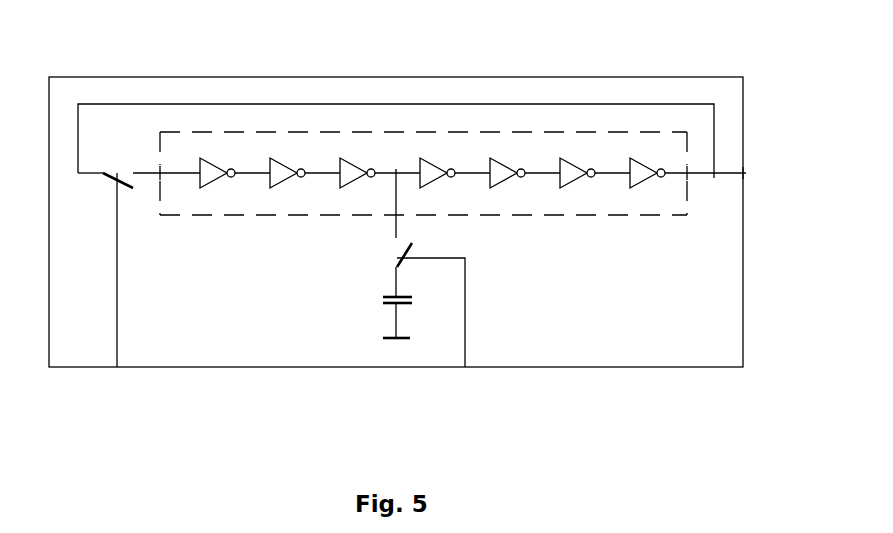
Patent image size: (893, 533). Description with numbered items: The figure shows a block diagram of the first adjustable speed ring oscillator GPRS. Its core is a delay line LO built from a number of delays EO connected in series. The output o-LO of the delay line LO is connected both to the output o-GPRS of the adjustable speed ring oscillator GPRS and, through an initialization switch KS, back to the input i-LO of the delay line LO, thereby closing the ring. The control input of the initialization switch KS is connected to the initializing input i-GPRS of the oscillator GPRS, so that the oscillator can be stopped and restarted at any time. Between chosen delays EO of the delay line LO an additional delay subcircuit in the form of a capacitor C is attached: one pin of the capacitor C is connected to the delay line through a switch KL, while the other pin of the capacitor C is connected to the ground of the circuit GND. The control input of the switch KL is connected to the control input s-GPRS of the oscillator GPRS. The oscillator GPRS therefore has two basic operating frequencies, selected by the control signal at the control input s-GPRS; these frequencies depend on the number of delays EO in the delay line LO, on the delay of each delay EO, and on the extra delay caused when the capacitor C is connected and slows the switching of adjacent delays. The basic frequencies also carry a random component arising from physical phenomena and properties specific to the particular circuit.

The initialization switch KS is at (151, 95).
The input of delay line i-LO is at (230, 91).
The delay line LO is at (423, 109).
The delays EO is at (508, 161).
The output of delay line o-LO is at (611, 91).
The output of adjustable speed ring oscillator o-GPRS is at (687, 91).
The initializing input of oscillator i-GPRS is at (156, 306).
The switch KL is at (322, 341).
The capacitor C is at (358, 353).
The ground of the circuit GND is at (439, 388).
The control input of oscillator s-GPRS is at (499, 348).
The adjustable speed ring oscillator GPRS is at (396, 258).